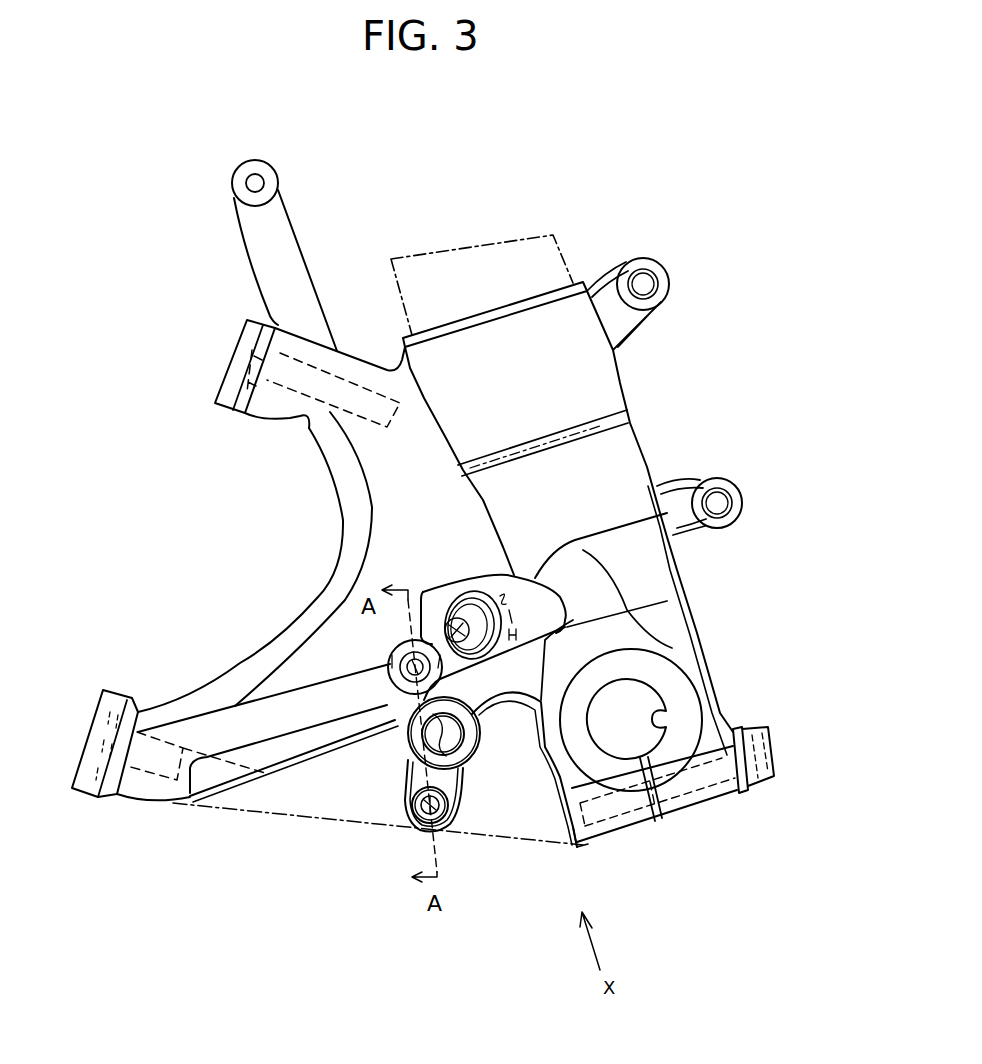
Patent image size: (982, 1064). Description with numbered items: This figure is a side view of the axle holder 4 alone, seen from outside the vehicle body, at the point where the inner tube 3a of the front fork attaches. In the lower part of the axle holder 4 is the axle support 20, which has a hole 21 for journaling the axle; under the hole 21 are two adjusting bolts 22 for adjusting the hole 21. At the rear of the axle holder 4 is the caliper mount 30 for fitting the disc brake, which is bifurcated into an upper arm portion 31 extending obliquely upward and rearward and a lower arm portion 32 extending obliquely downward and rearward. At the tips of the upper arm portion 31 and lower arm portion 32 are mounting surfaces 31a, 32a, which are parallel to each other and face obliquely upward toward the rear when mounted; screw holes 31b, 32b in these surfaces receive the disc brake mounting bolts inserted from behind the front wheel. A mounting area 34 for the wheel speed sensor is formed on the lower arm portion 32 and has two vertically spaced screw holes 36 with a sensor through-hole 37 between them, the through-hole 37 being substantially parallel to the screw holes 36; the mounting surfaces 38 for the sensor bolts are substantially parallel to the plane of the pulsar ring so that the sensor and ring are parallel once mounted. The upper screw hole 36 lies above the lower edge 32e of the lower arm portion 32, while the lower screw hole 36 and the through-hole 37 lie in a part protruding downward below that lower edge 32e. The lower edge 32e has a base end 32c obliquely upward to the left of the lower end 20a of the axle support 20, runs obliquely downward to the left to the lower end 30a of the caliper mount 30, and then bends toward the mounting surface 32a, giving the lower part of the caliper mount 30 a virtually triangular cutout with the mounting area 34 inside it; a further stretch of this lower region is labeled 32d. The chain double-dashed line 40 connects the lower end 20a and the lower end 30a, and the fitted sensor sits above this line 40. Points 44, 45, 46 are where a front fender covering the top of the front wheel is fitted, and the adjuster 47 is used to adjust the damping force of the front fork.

The inner tube 3a is at (517, 255).
The axle holder 4 is at (706, 310).
The axle support 20 is at (662, 670).
The lower end of the axle support 20a is at (579, 845).
The hole 21 is at (658, 712).
The adjusting bolts 22 is at (768, 753).
The caliper mount 30 is at (392, 554).
The lower end of the caliper mount 30a is at (174, 804).
The upper arm portion 31 is at (312, 437).
The mounting surface 31a is at (244, 320).
The screw hole 31b is at (240, 364).
The lower arm portion 32 is at (252, 715).
The mounting surface 32a is at (100, 690).
The screw hole 32b is at (103, 744).
The base end 32c is at (528, 660).
The lower edge of lower arm 32d is at (267, 778).
The lower edge 32e is at (303, 777).
The wheel speed sensor mounting area 34 is at (405, 822).
The screw holes 36 is at (400, 690).
The sensor through-hole 37 is at (437, 735).
The mounting surfaces 38 is at (393, 700).
The line 40 is at (305, 820).
The front fender fitting point 44 is at (272, 183).
The front fender fitting point 45 is at (668, 262).
The front fender fitting point 46 is at (742, 498).
The adjuster 47 is at (450, 612).